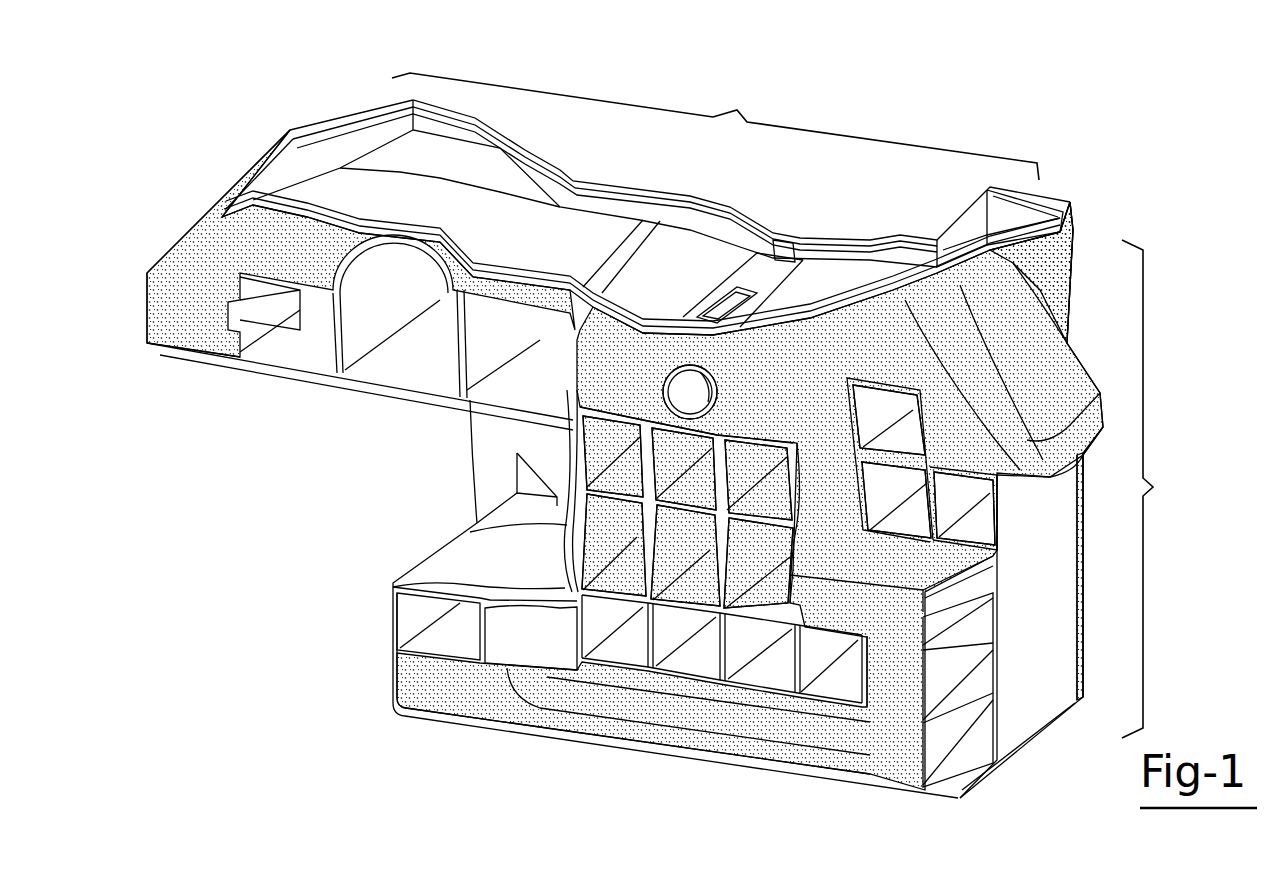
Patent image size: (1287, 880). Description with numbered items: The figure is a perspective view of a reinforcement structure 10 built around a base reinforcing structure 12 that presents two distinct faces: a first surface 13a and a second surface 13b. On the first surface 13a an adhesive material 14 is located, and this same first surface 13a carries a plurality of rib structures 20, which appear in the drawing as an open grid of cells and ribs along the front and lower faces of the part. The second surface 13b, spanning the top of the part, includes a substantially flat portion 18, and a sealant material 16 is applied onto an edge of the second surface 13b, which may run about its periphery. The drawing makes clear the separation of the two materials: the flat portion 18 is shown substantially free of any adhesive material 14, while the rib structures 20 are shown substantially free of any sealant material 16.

The reinforcement structure 10 is at (1172, 250).
The base reinforcing structure 12 is at (1052, 632).
The first surface 13a is at (1165, 489).
The second surface 13b is at (715, 126).
The adhesive material 14 is at (1010, 347).
The sealant material 16 is at (1053, 237).
The flat portion 18 is at (489, 210).
The rib structures 20 is at (470, 532).